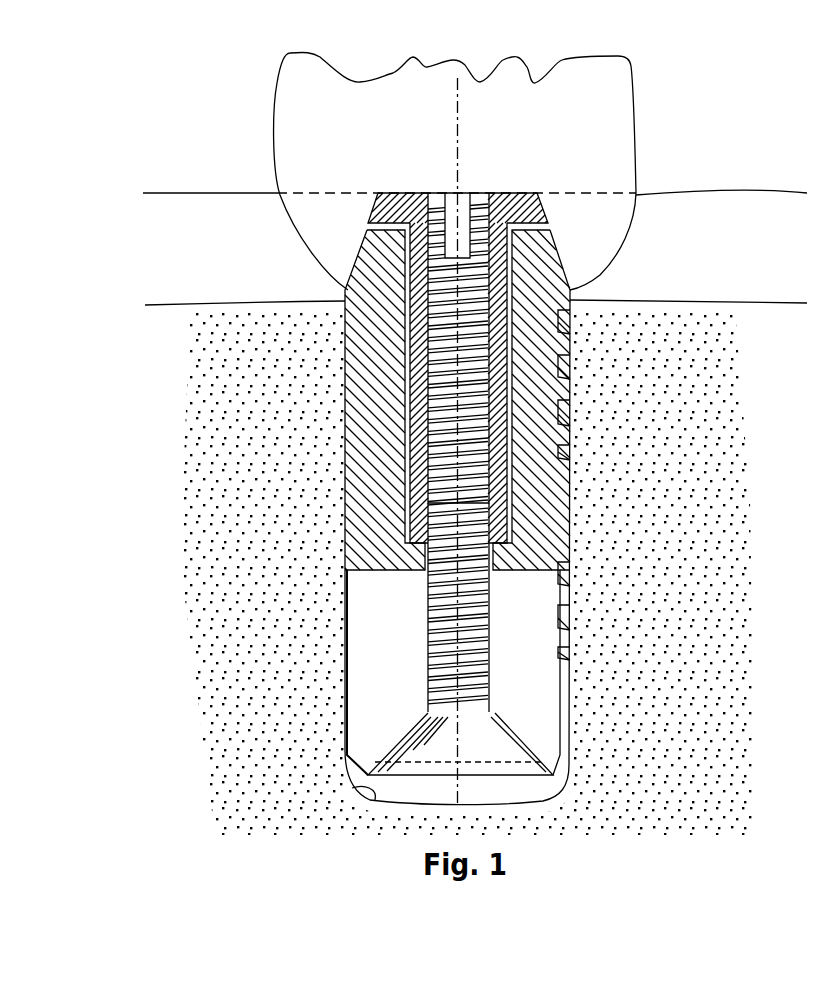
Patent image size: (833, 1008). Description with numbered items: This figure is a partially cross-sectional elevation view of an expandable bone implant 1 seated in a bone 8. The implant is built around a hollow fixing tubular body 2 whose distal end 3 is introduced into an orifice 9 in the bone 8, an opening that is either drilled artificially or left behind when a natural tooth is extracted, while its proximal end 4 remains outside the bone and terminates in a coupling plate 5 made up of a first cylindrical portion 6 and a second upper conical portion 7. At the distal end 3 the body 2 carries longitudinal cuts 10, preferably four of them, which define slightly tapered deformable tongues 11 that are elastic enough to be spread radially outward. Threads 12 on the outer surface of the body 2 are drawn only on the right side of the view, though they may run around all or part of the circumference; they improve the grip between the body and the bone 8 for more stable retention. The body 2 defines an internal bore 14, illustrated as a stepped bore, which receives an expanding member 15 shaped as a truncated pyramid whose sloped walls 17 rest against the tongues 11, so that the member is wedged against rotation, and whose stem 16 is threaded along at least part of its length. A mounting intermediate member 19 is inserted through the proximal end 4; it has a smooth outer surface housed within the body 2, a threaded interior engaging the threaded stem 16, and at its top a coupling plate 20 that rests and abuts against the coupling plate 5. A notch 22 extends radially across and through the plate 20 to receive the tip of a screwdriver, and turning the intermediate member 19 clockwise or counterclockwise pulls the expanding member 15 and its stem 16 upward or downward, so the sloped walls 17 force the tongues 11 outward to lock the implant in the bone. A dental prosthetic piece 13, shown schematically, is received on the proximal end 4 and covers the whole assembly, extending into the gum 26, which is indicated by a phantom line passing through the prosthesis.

The expandable bone implant 1 is at (277, 343).
The fixing tubular body 2 is at (343, 477).
The distal end 3 is at (618, 763).
The proximal end 4 is at (653, 257).
The coupling plate 5 is at (563, 255).
The first cylindrical portion 6 is at (343, 297).
The second upper conical portion 7 is at (358, 250).
The bone 8 is at (270, 733).
The orifice 9 is at (375, 800).
The longitudinal cuts 10 is at (530, 684).
The deformable tongues 11 is at (375, 668).
The threads 12 is at (572, 437).
The dental prosthetic piece 13 is at (637, 127).
The bore 14 is at (427, 506).
The expanding member 15 is at (469, 755).
The stem 16 is at (428, 604).
The sloped walls 17 is at (377, 762).
The mounting intermediate member 19 is at (420, 398).
The coupling plate 20 is at (373, 208).
The notch 22 is at (462, 213).
The gum 26 is at (754, 253).